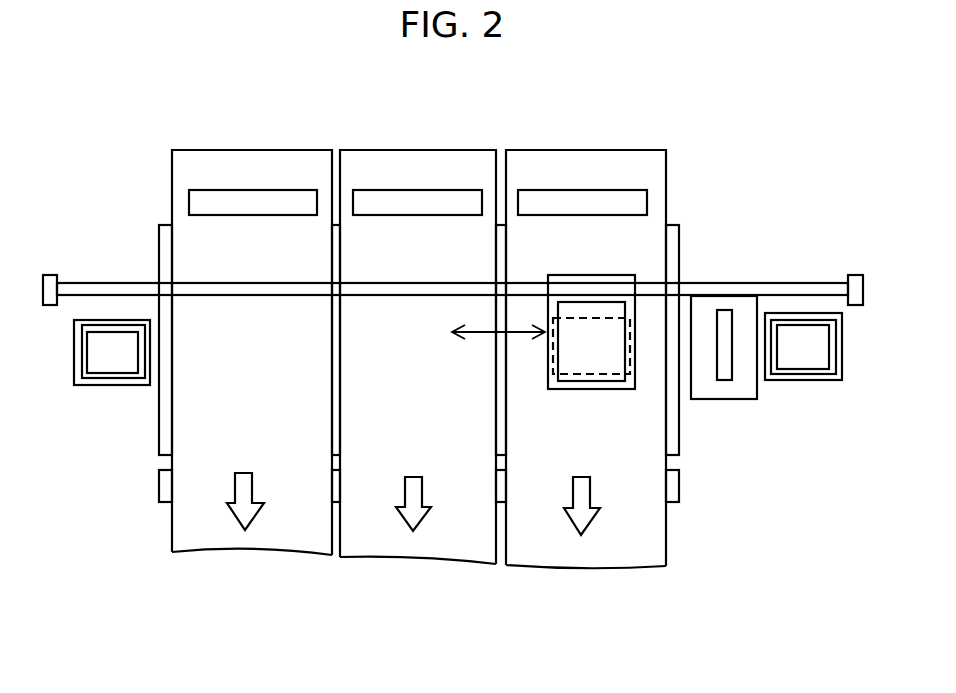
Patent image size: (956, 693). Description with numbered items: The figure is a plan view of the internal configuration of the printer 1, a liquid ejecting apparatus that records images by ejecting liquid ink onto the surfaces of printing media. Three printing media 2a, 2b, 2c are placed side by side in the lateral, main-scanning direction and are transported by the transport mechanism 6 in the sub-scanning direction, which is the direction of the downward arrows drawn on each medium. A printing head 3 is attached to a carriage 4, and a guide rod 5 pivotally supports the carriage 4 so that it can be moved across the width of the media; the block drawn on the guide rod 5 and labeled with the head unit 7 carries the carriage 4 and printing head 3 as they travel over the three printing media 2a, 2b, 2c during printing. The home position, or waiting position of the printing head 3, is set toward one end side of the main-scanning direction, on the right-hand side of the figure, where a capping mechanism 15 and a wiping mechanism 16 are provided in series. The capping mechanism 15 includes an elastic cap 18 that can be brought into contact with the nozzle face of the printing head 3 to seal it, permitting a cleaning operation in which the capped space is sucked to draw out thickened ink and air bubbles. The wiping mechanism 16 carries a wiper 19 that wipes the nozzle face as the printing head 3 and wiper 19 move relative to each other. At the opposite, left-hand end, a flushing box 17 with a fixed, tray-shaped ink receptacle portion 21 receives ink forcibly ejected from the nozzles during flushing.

The printer 1 is at (146, 184).
The printing medium 2a is at (249, 551).
The printing medium 2b is at (418, 558).
The printing medium 2c is at (585, 567).
The printing head 3 is at (610, 320).
The carriage 4 is at (591, 281).
The guide rod 5 is at (282, 292).
The transport mechanism 6 is at (221, 195).
The carriage 7 is at (566, 300).
The capping mechanism 15 is at (804, 386).
The wiping mechanism 16 is at (721, 404).
The flushing box 17 is at (112, 391).
The cap 18 is at (800, 325).
The wiper 19 is at (724, 310).
The ink receptacle portion 21 is at (110, 330).